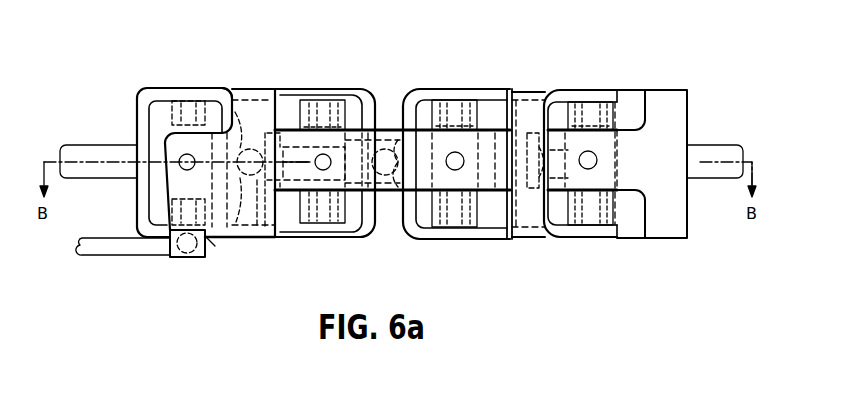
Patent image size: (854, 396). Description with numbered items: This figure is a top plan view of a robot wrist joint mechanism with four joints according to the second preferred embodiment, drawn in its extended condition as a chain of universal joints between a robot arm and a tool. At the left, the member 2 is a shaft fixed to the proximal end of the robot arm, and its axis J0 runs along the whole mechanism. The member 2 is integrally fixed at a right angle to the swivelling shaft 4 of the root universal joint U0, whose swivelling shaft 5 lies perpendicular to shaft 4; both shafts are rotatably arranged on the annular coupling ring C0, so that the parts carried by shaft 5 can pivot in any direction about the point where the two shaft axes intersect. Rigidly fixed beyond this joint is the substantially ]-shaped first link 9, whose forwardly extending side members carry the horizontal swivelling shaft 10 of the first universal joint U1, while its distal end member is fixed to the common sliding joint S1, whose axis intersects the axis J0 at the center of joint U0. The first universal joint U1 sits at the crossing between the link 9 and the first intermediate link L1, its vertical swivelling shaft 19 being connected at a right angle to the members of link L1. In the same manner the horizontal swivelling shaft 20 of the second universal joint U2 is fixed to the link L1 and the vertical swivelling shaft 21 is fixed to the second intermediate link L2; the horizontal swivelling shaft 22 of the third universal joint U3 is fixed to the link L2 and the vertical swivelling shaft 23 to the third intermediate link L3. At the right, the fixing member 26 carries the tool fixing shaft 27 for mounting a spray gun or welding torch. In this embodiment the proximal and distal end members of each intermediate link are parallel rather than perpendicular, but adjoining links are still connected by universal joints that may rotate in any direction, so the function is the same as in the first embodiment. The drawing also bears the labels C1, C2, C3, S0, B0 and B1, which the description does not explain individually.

The axis of the member J0 is at (97, 158).
The member 2 is at (108, 145).
The annular coupling ring C0 is at (160, 102).
The swivelling shaft 4 is at (190, 105).
The universal joint U0 is at (216, 115).
The swivelling shaft 5 is at (180, 166).
The bearing block B0 is at (258, 233).
The cage of second joint C1 is at (293, 120).
The first link 9 is at (292, 84).
The horizontal swivelling shaft 10 is at (322, 105).
The first universal joint U1 is at (347, 123).
The vertical swivelling shaft 19 is at (322, 170).
The spacer S0 is at (293, 225).
The common sliding joint S1 is at (362, 232).
The bearing B1 is at (398, 186).
The first intermediate link L1 is at (424, 111).
The cage of third joint C2 is at (485, 107).
The vertical swivelling shaft 21 is at (450, 95).
The second universal joint U2 is at (491, 121).
The horizontal swivelling shaft 20 is at (454, 170).
The second intermediate link L2 is at (510, 246).
The third universal joint U3 is at (619, 111).
The horizontal swivelling shaft 22 is at (585, 105).
The vertical swivelling shaft 23 is at (590, 169).
The cage of output coupling C3 is at (615, 122).
The third intermediate link L3 is at (625, 203).
The fixing member 26 is at (682, 215).
The tool fixing shaft 27 is at (712, 150).